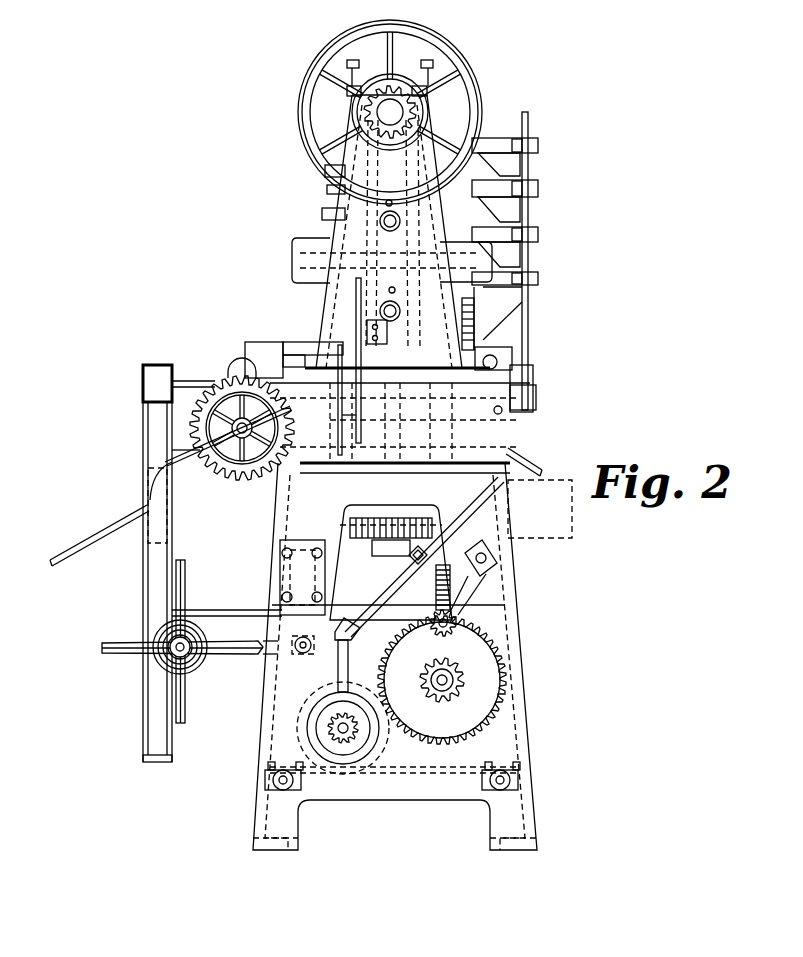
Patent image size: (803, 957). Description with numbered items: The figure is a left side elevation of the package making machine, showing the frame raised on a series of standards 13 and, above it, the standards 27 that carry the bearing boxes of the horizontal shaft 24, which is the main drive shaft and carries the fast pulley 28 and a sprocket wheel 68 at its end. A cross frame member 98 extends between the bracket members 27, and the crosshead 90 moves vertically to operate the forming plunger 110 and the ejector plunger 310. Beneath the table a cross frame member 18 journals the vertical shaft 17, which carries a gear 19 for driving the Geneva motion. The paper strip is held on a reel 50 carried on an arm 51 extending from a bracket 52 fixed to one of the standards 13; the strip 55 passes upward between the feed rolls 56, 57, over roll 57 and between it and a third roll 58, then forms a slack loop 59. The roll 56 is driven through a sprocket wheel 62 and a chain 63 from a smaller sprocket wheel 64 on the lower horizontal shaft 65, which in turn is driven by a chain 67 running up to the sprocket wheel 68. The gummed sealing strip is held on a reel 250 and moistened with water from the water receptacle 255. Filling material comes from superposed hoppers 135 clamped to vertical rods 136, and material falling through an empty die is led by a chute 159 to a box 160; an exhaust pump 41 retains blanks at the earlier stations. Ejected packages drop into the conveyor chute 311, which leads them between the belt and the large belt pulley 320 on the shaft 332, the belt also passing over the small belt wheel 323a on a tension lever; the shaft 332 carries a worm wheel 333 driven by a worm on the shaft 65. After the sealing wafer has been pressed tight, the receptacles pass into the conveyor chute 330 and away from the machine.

The fast pulley 28 is at (447, 66).
The sprocket wheel 68 is at (384, 112).
The horizontal shaft 24 is at (386, 125).
The standards 27 is at (443, 232).
The cross frame member 98 is at (326, 186).
The crosshead 90 is at (298, 246).
The vertical rods 136 is at (530, 168).
The hoppers 135 is at (488, 138).
The plunger 110 is at (469, 310).
The plunger 310 is at (330, 290).
The water receptacle 255 is at (275, 347).
The feed roll 57 is at (263, 340).
The third roll 58 is at (238, 362).
The feed roll 56 is at (213, 380).
The loop 59 is at (190, 424).
The conveyor chute 311 is at (198, 470).
The sprocket wheel 62 is at (216, 481).
The strip 55 is at (210, 480).
The chain 63 is at (228, 482).
The reel 250 is at (345, 455).
The belt pulley 320 is at (150, 722).
The belt wheel 323a is at (150, 372).
The conveyor chute 330 is at (90, 565).
The reel 50 is at (186, 600).
The arm 51 is at (258, 657).
The shaft 332 is at (228, 610).
The bracket 52 is at (297, 663).
The standards 13 is at (510, 600).
The chute 159 is at (526, 461).
The box 160 is at (575, 538).
The cross frame member 18 is at (377, 562).
The gear 19 is at (362, 546).
The vertical shaft 17 is at (392, 560).
The chain 67 is at (458, 552).
The worm wheel 333 is at (452, 583).
The sprocket wheel 64 is at (456, 675).
The horizontal shaft 65 is at (446, 693).
The exhaust pump 41 is at (343, 746).